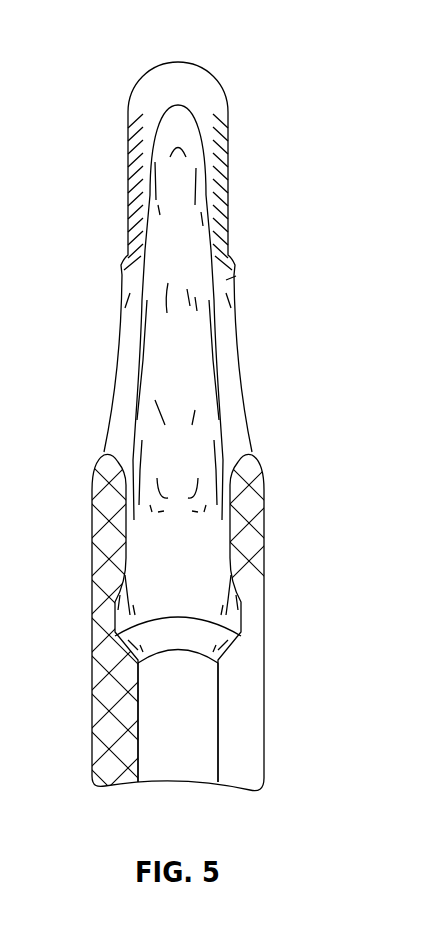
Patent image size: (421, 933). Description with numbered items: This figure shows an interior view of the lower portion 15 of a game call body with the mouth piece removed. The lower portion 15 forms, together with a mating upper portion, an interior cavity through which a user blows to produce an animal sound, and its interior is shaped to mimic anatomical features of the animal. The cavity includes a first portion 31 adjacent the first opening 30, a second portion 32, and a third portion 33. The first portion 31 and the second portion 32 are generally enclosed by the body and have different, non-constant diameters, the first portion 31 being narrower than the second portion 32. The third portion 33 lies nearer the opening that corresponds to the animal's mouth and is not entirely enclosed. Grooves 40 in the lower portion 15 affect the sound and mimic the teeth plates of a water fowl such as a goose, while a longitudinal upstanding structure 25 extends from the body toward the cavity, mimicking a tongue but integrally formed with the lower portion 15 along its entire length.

The lower portion 15 is at (128, 42).
The grooves 40 is at (128, 215).
The longitudinal upstanding structure 25 is at (173, 307).
The third portion 33 is at (192, 370).
The second portion 32 is at (192, 592).
The first portion 31 is at (192, 732).
The first opening 30 is at (159, 788).